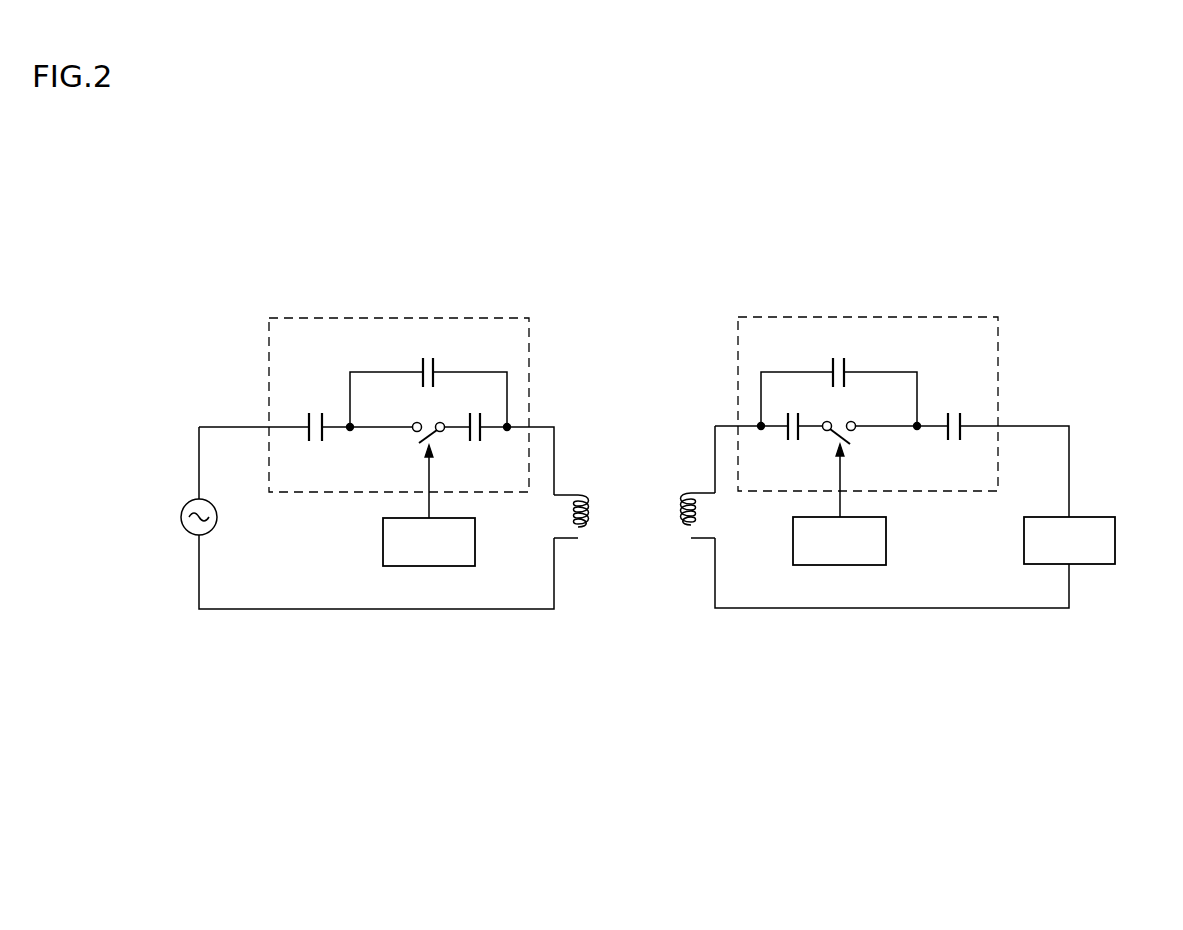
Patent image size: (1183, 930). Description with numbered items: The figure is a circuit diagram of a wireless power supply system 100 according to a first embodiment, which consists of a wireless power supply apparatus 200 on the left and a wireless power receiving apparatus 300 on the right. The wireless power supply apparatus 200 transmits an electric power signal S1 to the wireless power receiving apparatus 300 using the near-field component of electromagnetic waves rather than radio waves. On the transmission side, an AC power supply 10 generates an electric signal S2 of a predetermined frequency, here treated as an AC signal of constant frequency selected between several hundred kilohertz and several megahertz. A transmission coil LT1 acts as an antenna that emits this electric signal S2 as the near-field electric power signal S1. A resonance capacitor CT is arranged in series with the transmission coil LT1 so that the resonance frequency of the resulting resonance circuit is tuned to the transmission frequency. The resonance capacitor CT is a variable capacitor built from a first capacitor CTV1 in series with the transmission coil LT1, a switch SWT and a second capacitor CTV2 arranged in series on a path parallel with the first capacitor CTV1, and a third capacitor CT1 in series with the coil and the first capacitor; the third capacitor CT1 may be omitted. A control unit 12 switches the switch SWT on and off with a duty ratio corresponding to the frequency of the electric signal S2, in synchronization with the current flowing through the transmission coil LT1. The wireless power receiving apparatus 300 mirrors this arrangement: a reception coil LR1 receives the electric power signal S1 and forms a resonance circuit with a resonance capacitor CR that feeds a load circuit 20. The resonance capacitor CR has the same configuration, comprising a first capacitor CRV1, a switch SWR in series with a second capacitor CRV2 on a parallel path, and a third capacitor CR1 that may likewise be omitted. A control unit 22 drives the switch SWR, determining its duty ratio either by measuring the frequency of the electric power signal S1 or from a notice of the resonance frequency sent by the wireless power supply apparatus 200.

The wireless power supply apparatus 200 is at (247, 283).
The wireless power receiving apparatus 300 is at (1020, 283).
The wireless power supply system 100 is at (655, 672).
The AC power supply 10 is at (184, 532).
The control unit 12 is at (382, 551).
The load circuit 20 is at (1117, 546).
The control unit 22 is at (887, 549).
The electric power signal S1 is at (655, 518).
The electric signal S2 is at (181, 486).
The resonance capacitor CT is at (337, 317).
The third capacitor CT1 is at (312, 409).
The first capacitor CTV1 is at (429, 353).
The second capacitor CTV2 is at (479, 445).
The switch SWT is at (423, 412).
The transmission coil LT1 is at (580, 546).
The resonance capacitor CR is at (933, 317).
The third capacitor CR1 is at (966, 387).
The first capacitor CRV1 is at (840, 352).
The second capacitor CRV2 is at (793, 444).
The switch SWR is at (840, 417).
The reception coil LR1 is at (691, 546).